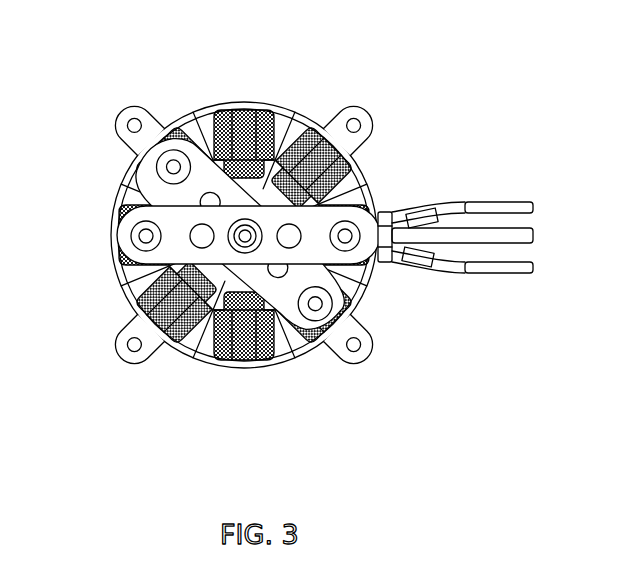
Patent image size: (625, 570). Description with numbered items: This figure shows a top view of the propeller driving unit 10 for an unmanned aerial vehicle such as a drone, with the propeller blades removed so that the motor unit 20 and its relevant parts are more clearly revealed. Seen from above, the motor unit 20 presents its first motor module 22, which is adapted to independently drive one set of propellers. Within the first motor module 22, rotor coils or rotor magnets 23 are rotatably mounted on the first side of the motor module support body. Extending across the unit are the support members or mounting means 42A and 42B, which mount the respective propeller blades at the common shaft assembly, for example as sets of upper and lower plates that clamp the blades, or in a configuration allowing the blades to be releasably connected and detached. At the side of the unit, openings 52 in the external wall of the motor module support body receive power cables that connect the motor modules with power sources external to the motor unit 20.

The propeller driving unit 10 is at (100, 121).
The motor unit 20 is at (383, 193).
The first motor module 22 is at (267, 362).
The rotor coils or rotor magnets 23 is at (363, 130).
The support member or mounting means 42A is at (315, 230).
The support member or mounting means 42B is at (200, 183).
The openings 52 is at (392, 247).